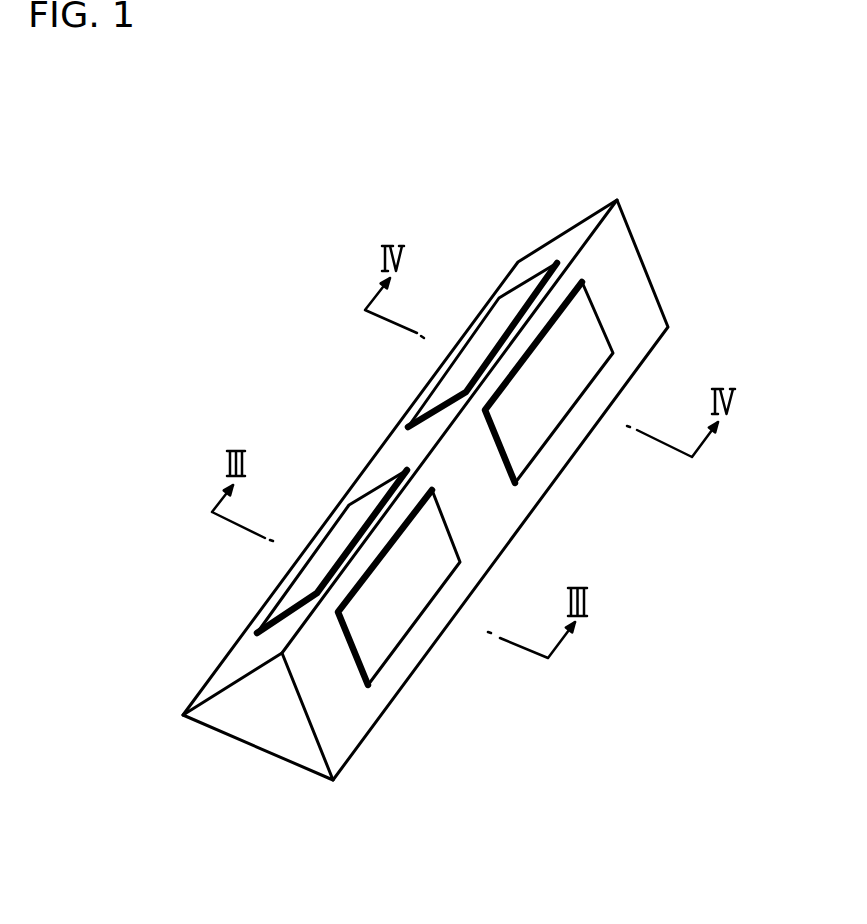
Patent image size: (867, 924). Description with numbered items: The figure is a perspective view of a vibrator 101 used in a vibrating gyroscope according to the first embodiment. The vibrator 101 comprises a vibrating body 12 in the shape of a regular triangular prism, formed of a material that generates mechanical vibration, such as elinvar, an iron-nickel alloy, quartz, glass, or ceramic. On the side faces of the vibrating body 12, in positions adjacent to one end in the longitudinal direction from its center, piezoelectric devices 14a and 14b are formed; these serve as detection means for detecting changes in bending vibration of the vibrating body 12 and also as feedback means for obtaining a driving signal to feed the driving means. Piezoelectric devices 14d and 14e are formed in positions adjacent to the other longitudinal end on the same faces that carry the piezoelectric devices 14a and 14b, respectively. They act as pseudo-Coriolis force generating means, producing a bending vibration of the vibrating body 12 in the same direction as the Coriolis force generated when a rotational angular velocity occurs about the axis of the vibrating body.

The vibrator 101 is at (205, 153).
The vibrating body 12 is at (637, 280).
The piezoelectric device 14a is at (302, 587).
The piezoelectric device 14b is at (383, 635).
The piezoelectric device 14d is at (500, 315).
The piezoelectric device 14e is at (585, 357).